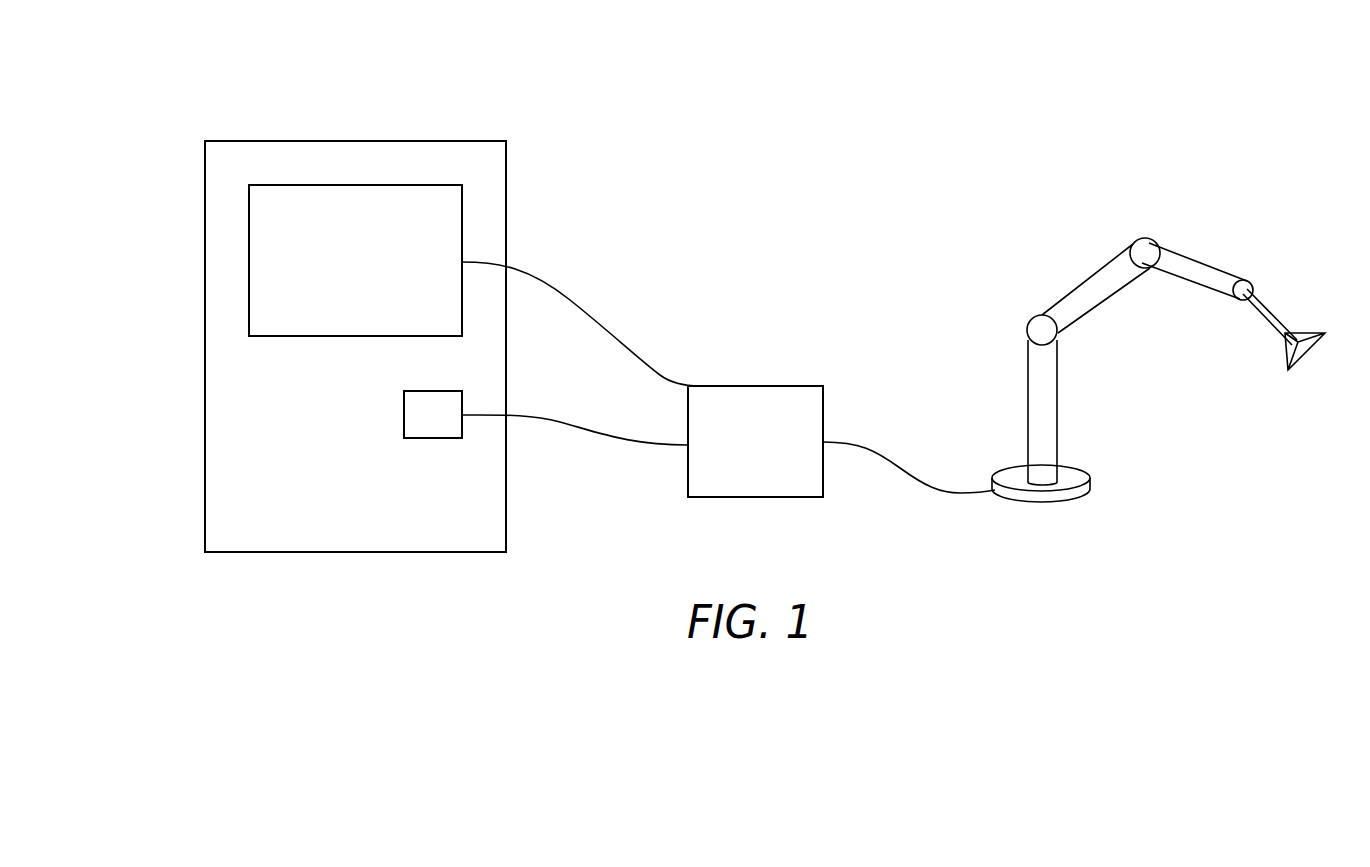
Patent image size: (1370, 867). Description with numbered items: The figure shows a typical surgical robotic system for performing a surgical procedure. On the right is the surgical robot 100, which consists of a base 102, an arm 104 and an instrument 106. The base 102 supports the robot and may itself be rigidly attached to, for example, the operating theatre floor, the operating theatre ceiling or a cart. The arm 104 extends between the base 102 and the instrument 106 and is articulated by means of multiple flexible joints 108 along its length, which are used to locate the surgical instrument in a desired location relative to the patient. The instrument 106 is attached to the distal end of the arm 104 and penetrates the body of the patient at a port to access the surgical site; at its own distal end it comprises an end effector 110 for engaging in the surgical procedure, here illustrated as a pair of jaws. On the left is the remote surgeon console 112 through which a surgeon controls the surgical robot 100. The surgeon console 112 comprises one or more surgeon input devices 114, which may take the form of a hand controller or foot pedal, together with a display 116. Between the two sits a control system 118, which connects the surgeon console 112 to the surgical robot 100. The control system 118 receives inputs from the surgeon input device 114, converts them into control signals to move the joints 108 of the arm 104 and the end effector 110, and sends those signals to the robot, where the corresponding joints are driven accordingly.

The surgical robot 100 is at (1170, 336).
The base 102 is at (1090, 485).
The arm 104 is at (1113, 308).
The instrument 106 is at (1278, 306).
The flexible joints 108 is at (1032, 319).
The end effector 110 is at (1292, 362).
The surgeon console 112 is at (466, 109).
The surgeon input device 114 is at (404, 400).
The display 116 is at (249, 192).
The control system 118 is at (795, 498).